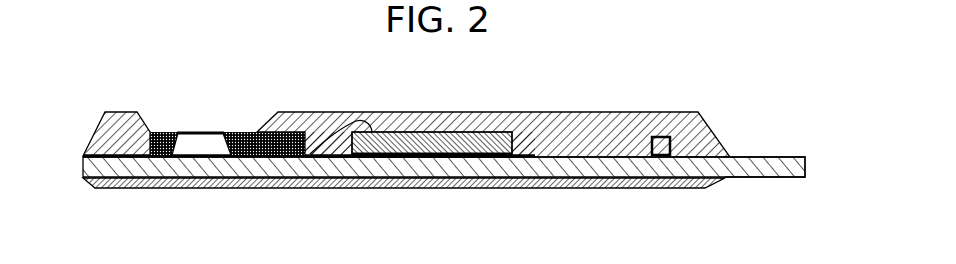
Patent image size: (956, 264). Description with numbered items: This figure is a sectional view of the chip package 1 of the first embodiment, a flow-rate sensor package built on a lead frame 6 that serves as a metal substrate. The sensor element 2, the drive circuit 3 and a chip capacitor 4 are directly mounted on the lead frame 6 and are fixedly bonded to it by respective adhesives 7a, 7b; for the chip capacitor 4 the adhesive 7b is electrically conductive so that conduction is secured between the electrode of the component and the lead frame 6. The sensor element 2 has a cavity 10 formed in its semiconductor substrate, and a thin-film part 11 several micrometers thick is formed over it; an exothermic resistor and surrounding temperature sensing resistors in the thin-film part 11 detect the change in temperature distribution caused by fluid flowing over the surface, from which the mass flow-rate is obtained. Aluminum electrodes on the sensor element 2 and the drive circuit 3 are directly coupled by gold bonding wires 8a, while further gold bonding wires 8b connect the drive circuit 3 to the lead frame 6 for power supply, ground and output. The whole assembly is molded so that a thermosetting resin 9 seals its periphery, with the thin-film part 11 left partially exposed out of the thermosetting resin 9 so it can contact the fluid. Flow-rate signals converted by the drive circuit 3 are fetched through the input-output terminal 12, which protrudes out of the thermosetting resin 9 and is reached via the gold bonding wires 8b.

The chip package 1 is at (595, 188).
The sensor element 2 is at (246, 142).
The drive circuit 3 is at (440, 138).
The chip capacitor 4 is at (662, 145).
The lead frame 6 is at (450, 160).
The adhesive 7a is at (357, 157).
The electrically conductive adhesive 7b is at (662, 157).
The gold bonding wire 8a is at (330, 134).
The gold bonding wire 8b is at (531, 136).
The thermosetting resin 9 is at (576, 133).
The cavity 10 is at (198, 145).
The thin-film part 11 is at (199, 131).
The input-output terminal 12 is at (785, 157).